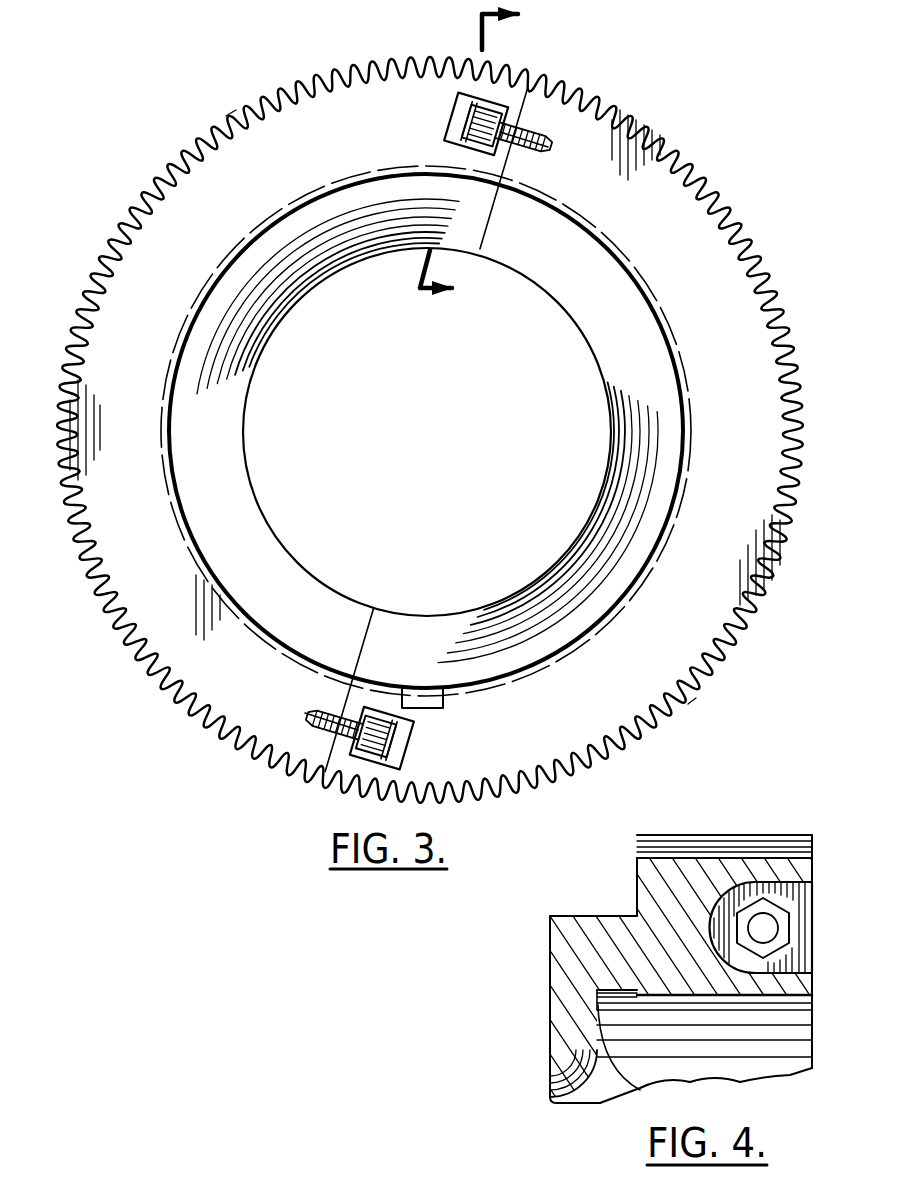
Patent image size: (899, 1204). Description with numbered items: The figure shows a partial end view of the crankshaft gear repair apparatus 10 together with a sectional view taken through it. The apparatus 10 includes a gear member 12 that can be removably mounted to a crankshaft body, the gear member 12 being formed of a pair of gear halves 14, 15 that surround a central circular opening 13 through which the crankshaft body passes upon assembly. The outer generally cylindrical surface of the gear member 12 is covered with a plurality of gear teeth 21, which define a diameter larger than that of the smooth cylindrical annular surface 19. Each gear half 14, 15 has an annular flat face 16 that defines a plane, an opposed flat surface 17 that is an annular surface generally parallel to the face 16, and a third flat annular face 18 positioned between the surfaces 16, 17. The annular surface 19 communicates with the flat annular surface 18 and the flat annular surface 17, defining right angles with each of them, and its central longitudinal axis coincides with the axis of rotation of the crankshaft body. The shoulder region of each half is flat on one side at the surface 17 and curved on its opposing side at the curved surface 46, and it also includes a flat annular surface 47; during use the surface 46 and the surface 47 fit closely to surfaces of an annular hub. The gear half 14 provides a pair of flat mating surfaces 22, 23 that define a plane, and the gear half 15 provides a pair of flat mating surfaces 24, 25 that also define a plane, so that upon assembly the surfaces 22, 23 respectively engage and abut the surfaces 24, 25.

In FIG. 3, the crankshaft gear repair apparatus 10 is at (190, 731).
In FIG. 3, the gear member 12 is at (514, 72).
In FIG. 3, the central circular opening 13 is at (346, 486).
In FIG. 4, the central circular opening 13 is at (815, 1040).
In FIG. 3, the gear half 14 is at (683, 175).
In FIG. 3, the gear half 15 is at (163, 262).
In FIG. 4, the gear half 15 is at (556, 972).
In FIG. 4, the annular flat face 16 is at (814, 838).
In FIG. 4, the opposed flat surface 17 is at (548, 1043).
In FIG. 4, the third flat annular face 18 is at (634, 878).
In FIG. 4, the annular surface 19 is at (578, 914).
In FIG. 3, the gear teeth 21 is at (230, 118).
In FIG. 4, the gear teeth 21 is at (705, 845).
In FIG. 3, the flat mating surface 22 is at (530, 106).
In FIG. 3, the flat mating surface 23 is at (335, 760).
In FIG. 3, the flat mating surface 24 is at (500, 167).
In FIG. 3, the flat mating surface 25 is at (320, 757).
In FIG. 3, the curved surface 46 is at (606, 311).
In FIG. 4, the curved surface 46 is at (585, 1100).
In FIG. 4, the flat annular surface 47 is at (640, 1090).